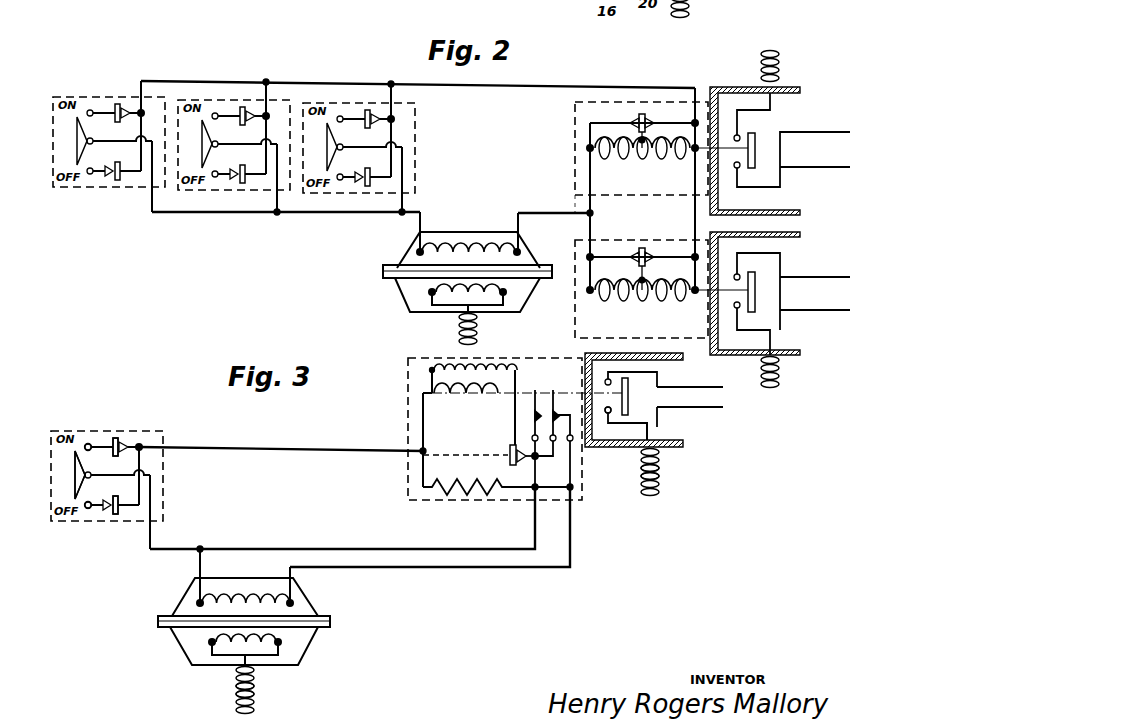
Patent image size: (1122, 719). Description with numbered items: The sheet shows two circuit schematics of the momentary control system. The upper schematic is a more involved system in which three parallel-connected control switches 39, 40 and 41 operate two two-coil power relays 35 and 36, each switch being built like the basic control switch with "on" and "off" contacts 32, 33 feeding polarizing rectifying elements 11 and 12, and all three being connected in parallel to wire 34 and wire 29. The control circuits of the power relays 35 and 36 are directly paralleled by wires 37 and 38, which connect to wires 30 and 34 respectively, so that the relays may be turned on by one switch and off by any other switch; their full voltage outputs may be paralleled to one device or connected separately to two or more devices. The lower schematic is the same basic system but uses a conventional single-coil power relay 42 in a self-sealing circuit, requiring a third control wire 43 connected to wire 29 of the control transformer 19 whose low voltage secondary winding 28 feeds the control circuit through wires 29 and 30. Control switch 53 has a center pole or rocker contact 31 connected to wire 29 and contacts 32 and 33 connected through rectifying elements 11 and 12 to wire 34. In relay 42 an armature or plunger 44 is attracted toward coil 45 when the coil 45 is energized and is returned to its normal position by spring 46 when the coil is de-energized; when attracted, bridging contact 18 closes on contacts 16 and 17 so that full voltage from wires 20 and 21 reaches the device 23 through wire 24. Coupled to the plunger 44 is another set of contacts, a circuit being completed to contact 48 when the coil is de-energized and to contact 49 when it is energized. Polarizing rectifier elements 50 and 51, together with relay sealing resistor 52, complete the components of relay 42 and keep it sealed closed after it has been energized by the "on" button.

In FIG. 3, the polarizing rectifying element 11 is at (122, 436).
In FIG. 3, the polarizing rectifying element 12 is at (116, 518).
In FIG. 3, the contact 16 is at (606, 414).
In FIG. 3, the contact 17 is at (585, 353).
In FIG. 3, the bridging contact 18 is at (630, 389).
In FIG. 3, the voltage step-down control transformer 19 is at (259, 579).
In FIG. 3, the wire 20 is at (644, 446).
In FIG. 3, the wire 21 is at (660, 424).
In FIG. 3, the device 23 is at (701, 397).
In FIG. 3, the wire 24 is at (703, 387).
In FIG. 3, the secondary winding 28 is at (190, 601).
In FIG. 2, the wire 29 is at (424, 216).
In FIG. 3, the wire 29 is at (183, 547).
In FIG. 2, the wire 30 is at (518, 213).
In FIG. 3, the wire 30 is at (572, 569).
In FIG. 3, the rocker contact 31 is at (80, 474).
In FIG. 3, the control switch contact 32 is at (90, 443).
In FIG. 3, the control switch contact 33 is at (90, 509).
In FIG. 2, the wire 34 is at (538, 86).
In FIG. 3, the wire 34 is at (305, 449).
In FIG. 2, the power relay 35 is at (607, 197).
In FIG. 2, the power relay 36 is at (575, 296).
In FIG. 2, the wire 37 is at (582, 213).
In FIG. 2, the wire 38 is at (696, 216).
In FIG. 2, the control switch 39 is at (106, 190).
In FIG. 2, the control switch 40 is at (214, 193).
In FIG. 2, the control switch 41 is at (335, 197).
In FIG. 3, the power relay 42 is at (406, 414).
In FIG. 3, the third control wire 43 is at (372, 547).
In FIG. 3, the armature or plunger 44 is at (514, 386).
In FIG. 3, the coil 45 is at (473, 404).
In FIG. 3, the spring 46 is at (440, 366).
In FIG. 3, the contact 48 is at (557, 412).
In FIG. 3, the contact 49 is at (537, 410).
In FIG. 3, the polarizing rectifier element 50 is at (533, 491).
In FIG. 3, the polarizing rectifier element 51 is at (508, 460).
In FIG. 3, the relay sealing resistor 52 is at (466, 496).
In FIG. 3, the control switch 53 is at (160, 432).